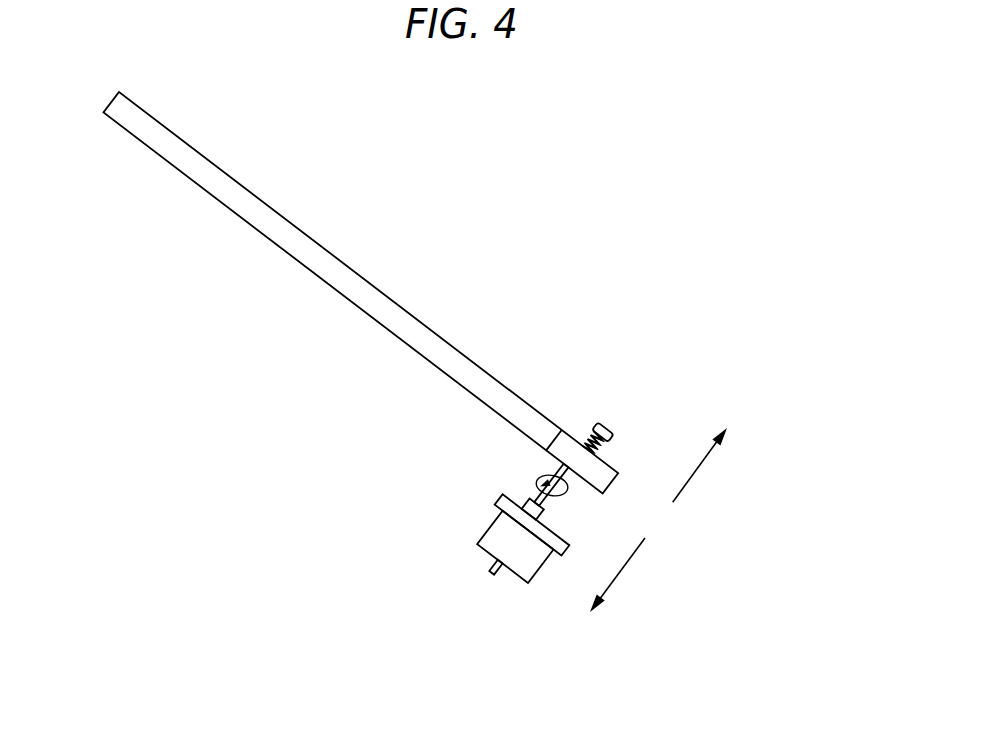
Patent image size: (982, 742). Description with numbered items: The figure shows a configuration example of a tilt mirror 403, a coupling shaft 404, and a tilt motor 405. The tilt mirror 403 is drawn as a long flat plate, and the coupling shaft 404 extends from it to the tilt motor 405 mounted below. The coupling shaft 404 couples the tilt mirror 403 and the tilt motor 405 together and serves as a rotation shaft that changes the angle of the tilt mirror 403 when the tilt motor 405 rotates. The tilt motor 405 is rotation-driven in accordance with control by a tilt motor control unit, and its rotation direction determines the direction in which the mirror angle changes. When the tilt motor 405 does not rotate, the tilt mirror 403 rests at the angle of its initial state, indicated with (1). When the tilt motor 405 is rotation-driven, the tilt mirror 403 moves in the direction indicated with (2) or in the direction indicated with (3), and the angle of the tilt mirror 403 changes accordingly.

The tilt mirror 403 is at (369, 282).
The coupling shaft 404 is at (472, 491).
The tilt motor 405 is at (456, 550).
The initial state angle 1 is at (615, 487).
The movement direction 2 is at (618, 578).
The movement direction 3 is at (693, 475).